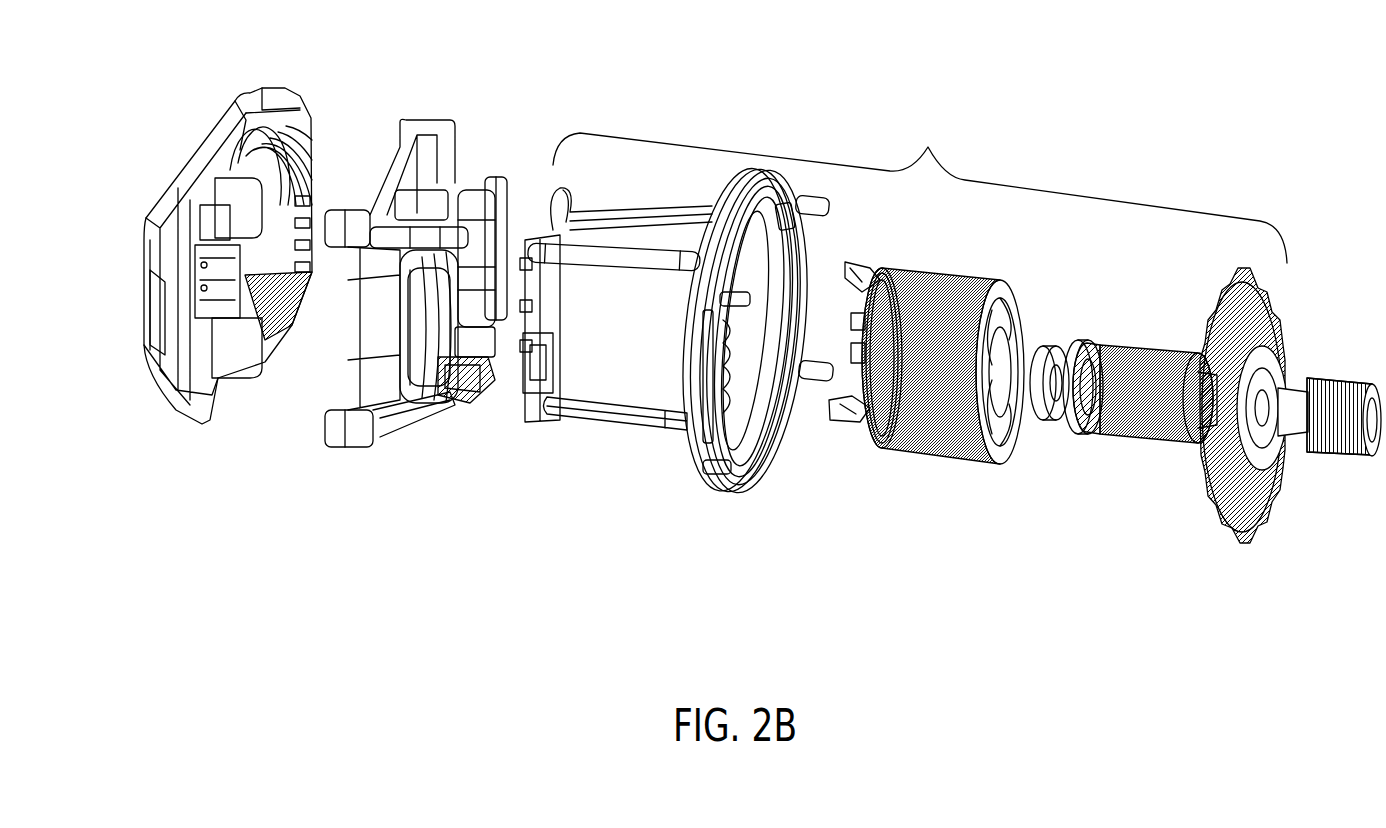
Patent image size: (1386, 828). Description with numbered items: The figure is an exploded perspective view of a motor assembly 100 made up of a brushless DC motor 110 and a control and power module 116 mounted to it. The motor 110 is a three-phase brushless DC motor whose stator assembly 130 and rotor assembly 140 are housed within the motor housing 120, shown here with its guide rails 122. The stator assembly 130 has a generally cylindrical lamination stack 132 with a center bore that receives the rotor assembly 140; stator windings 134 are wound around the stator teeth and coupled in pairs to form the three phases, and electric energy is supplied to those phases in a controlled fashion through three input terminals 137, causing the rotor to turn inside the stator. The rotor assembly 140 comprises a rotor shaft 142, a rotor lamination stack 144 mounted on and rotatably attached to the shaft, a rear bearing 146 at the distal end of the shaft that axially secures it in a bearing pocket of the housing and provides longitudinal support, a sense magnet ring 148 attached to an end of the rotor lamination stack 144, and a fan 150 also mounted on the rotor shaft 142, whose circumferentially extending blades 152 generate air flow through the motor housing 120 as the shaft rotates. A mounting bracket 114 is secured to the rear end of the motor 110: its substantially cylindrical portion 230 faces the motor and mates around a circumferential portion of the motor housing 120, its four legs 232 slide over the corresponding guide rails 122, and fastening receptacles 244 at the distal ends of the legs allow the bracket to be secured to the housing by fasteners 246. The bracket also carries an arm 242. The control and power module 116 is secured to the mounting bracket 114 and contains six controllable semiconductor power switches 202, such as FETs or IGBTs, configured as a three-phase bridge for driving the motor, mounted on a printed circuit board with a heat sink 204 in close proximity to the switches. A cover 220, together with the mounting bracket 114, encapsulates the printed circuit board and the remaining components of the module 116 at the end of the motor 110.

The motor assembly 100 is at (1079, 72).
The brushless DC motor 110 is at (920, 191).
The mounting bracket 114 is at (424, 327).
The control and power module 116 is at (214, 287).
The motor housing 120 is at (671, 337).
The guide rails 122 is at (660, 212).
The stator assembly 130 is at (940, 366).
The lamination stack 132 is at (953, 273).
The stator windings 134 is at (1017, 303).
The input terminals 137 is at (847, 263).
The rotor assembly 140 is at (1205, 407).
The rotor shaft 142 is at (1063, 407).
The rotor lamination stack 144 is at (1160, 353).
The rear bearing 146 is at (1053, 352).
The sense magnet ring 148 is at (1083, 430).
The fan 150 is at (1215, 407).
The blades 152 is at (1250, 277).
The power switches 202 is at (218, 235).
The heat sink 204 is at (307, 119).
The cover 220 is at (158, 274).
The cylindrical portion 230 is at (482, 183).
The legs 232 is at (497, 178).
The bracket arm 242 is at (400, 162).
The fastening receptacles 244 is at (480, 380).
The fasteners 246 is at (530, 410).